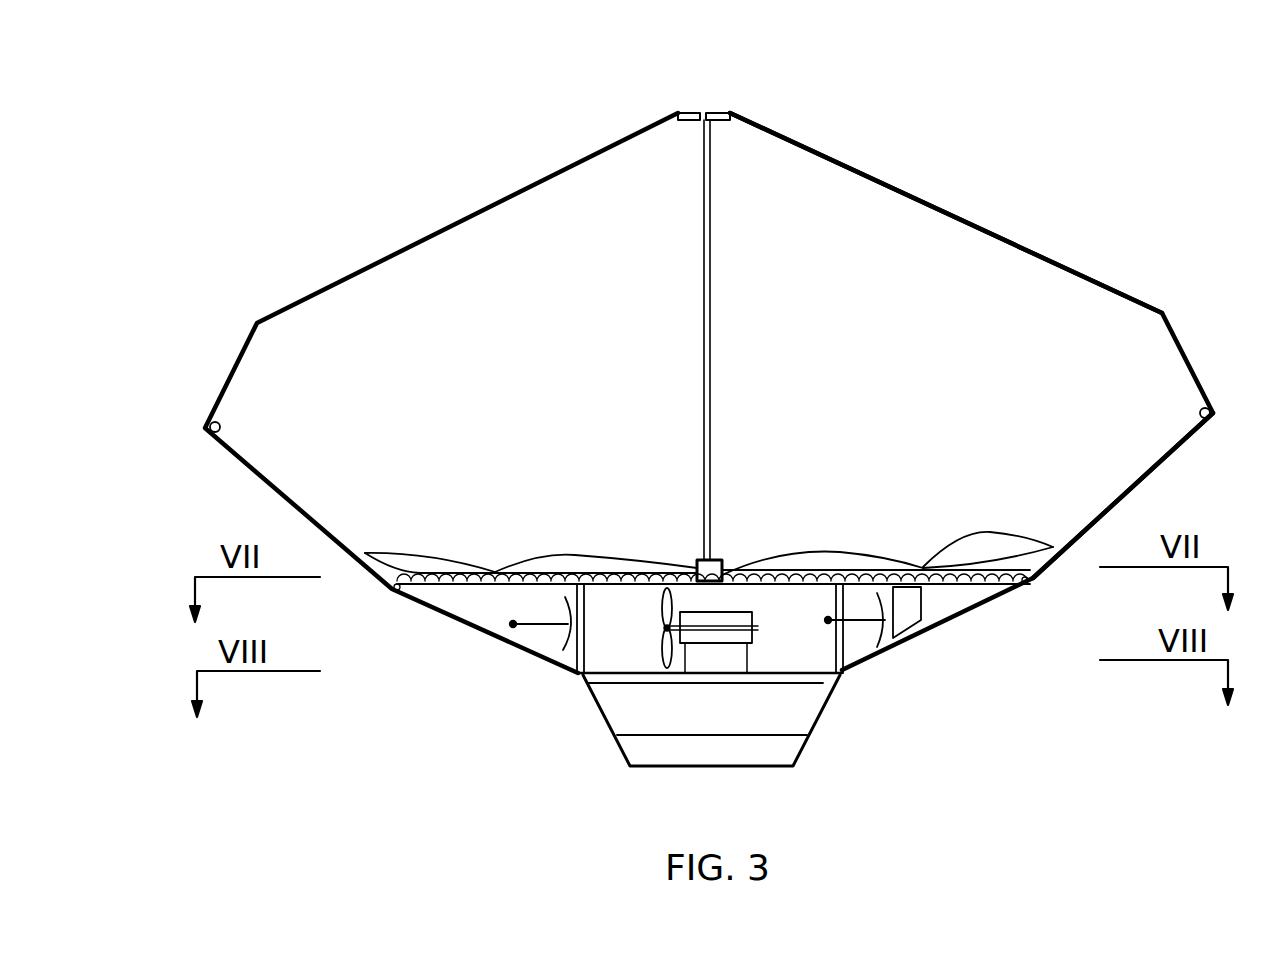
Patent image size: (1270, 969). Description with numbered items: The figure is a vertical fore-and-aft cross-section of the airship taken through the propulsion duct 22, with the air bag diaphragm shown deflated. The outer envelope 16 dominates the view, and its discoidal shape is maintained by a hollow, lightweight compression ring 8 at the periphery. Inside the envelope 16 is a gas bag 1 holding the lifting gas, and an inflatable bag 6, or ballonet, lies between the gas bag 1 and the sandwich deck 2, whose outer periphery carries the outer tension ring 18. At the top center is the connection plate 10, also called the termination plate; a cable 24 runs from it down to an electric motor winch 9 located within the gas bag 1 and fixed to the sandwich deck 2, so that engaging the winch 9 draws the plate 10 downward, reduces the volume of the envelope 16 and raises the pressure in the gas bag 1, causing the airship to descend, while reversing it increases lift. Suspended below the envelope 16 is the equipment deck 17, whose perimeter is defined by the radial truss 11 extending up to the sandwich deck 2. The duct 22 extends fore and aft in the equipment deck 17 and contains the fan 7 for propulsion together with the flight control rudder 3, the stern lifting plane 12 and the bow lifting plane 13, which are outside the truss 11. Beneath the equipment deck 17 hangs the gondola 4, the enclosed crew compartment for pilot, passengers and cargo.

The gas bag 1 is at (817, 193).
The sandwich deck 2 is at (1053, 547).
The flight control rudder 3 is at (917, 635).
The gondola 4 is at (758, 766).
The inflatable bag 6 is at (860, 553).
The fan 7 is at (660, 628).
The compression ring 8 is at (1197, 413).
The electric motor winch 9 is at (697, 560).
The connection plate 10 is at (700, 125).
The radial truss 11 is at (573, 650).
The stern lifting plane 12 is at (857, 623).
The bow lifting plane 13 is at (537, 625).
The envelope 16 is at (948, 210).
The equipment deck 17 is at (665, 640).
The outer tension ring 18 is at (397, 588).
The duct 22 is at (787, 632).
The cable 24 is at (703, 250).